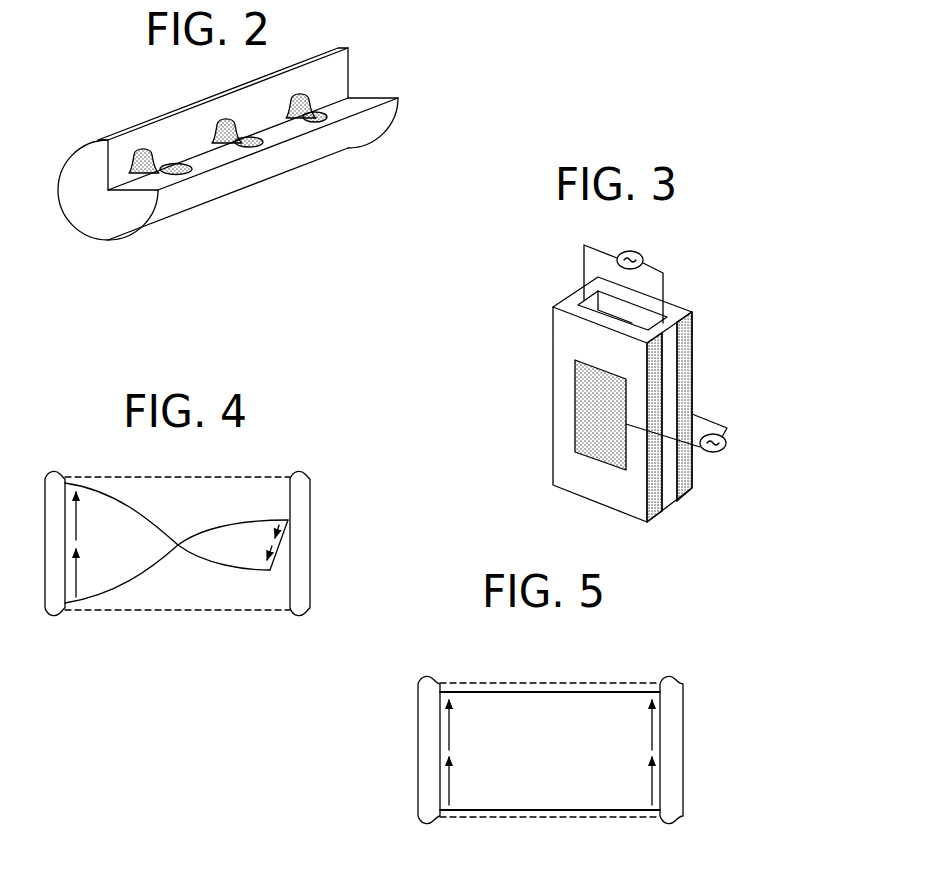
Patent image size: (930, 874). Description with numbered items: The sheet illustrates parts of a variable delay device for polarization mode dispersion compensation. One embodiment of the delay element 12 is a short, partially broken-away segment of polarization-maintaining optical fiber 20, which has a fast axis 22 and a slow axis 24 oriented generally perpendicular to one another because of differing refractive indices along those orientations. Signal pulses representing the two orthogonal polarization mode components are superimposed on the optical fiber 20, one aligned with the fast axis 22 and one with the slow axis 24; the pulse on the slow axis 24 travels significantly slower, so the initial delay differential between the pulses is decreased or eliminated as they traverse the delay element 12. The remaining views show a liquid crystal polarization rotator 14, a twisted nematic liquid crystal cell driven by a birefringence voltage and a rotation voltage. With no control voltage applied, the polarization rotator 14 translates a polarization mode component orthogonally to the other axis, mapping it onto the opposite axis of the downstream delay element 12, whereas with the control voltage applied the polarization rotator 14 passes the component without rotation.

In FIG. 2, the delay element 12 is at (280, 161).
In FIG. 2, the polarization-maintaining optical fiber 20 is at (186, 201).
In FIG. 2, the fast axis 22 is at (133, 190).
In FIG. 2, the slow axis 24 is at (108, 167).
In FIG. 3, the polarization rotator 14 is at (567, 472).
In FIG. 4, the polarization rotator 14 is at (107, 477).
In FIG. 5, the polarization rotator 14 is at (630, 683).